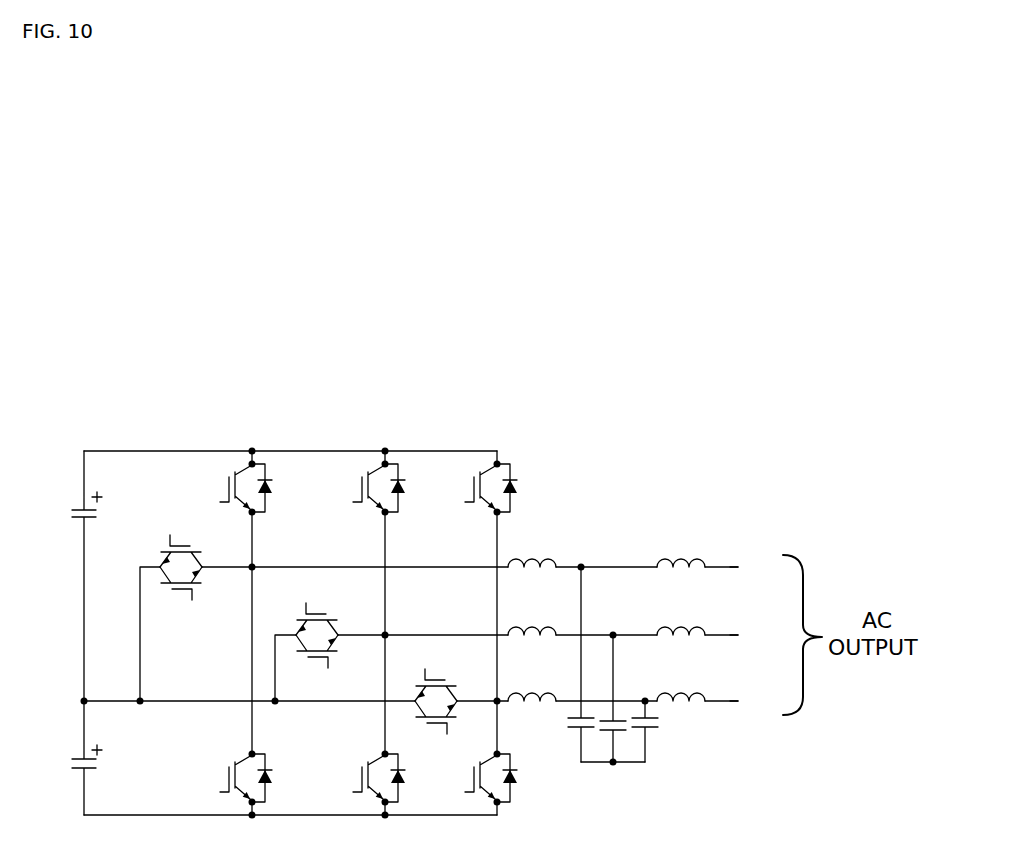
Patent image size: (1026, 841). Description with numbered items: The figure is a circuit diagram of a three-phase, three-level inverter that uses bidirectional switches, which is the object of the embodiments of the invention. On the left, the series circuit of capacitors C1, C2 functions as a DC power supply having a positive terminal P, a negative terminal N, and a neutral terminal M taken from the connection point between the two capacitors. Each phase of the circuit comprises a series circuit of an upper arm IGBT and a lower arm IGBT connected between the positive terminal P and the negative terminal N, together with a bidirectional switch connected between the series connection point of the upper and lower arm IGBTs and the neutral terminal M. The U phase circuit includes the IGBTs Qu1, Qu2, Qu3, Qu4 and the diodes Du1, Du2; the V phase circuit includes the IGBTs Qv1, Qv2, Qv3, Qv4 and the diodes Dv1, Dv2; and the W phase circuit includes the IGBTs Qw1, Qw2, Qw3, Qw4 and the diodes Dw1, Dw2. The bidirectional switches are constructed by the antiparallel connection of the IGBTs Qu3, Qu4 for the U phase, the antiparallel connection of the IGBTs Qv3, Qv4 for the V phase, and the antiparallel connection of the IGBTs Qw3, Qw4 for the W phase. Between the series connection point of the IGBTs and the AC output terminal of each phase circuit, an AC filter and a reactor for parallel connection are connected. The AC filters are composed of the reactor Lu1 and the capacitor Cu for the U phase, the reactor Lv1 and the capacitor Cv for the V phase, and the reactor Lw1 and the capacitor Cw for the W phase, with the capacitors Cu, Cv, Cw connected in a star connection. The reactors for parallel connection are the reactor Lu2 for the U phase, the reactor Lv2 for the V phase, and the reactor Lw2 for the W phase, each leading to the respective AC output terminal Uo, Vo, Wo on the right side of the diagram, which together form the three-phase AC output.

The positive terminal P is at (278, 454).
The neutral terminal M is at (236, 701).
The negative terminal N is at (277, 819).
The capacitor C1 is at (101, 576).
The capacitor C2 is at (101, 758).
The IGBT Qu1 is at (222, 484).
The IGBT Qu2 is at (228, 768).
The IGBT Qu3 is at (203, 548).
The IGBT Qu4 is at (173, 595).
The IGBT Qv1 is at (358, 484).
The IGBT Qv2 is at (358, 771).
The IGBT Qv3 is at (335, 616).
The IGBT Qv4 is at (310, 666).
The IGBT Qw1 is at (464, 484).
The IGBT Qw2 is at (471, 771).
The IGBT Qw3 is at (448, 676).
The IGBT Qw4 is at (424, 729).
The diode Du1 is at (285, 493).
The diode Du2 is at (285, 782).
The diode Dv1 is at (420, 493).
The diode Dv2 is at (420, 782).
The diode Dw1 is at (533, 493).
The diode Dw2 is at (533, 782).
The AC filter reactor Lu1 is at (537, 551).
The reactor for parallel connection Lu2 is at (681, 551).
The AC filter reactor Lv1 is at (537, 619).
The reactor for parallel connection Lv2 is at (681, 619).
The AC filter reactor Lw1 is at (539, 684).
The reactor for parallel connection Lw2 is at (683, 684).
The AC filter capacitor Cu is at (569, 663).
The AC filter capacitor Cv is at (611, 713).
The AC filter capacitor Cw is at (656, 730).
The AC output terminal Uo is at (753, 569).
The AC output terminal Vo is at (752, 636).
The AC output terminal Wo is at (755, 701).